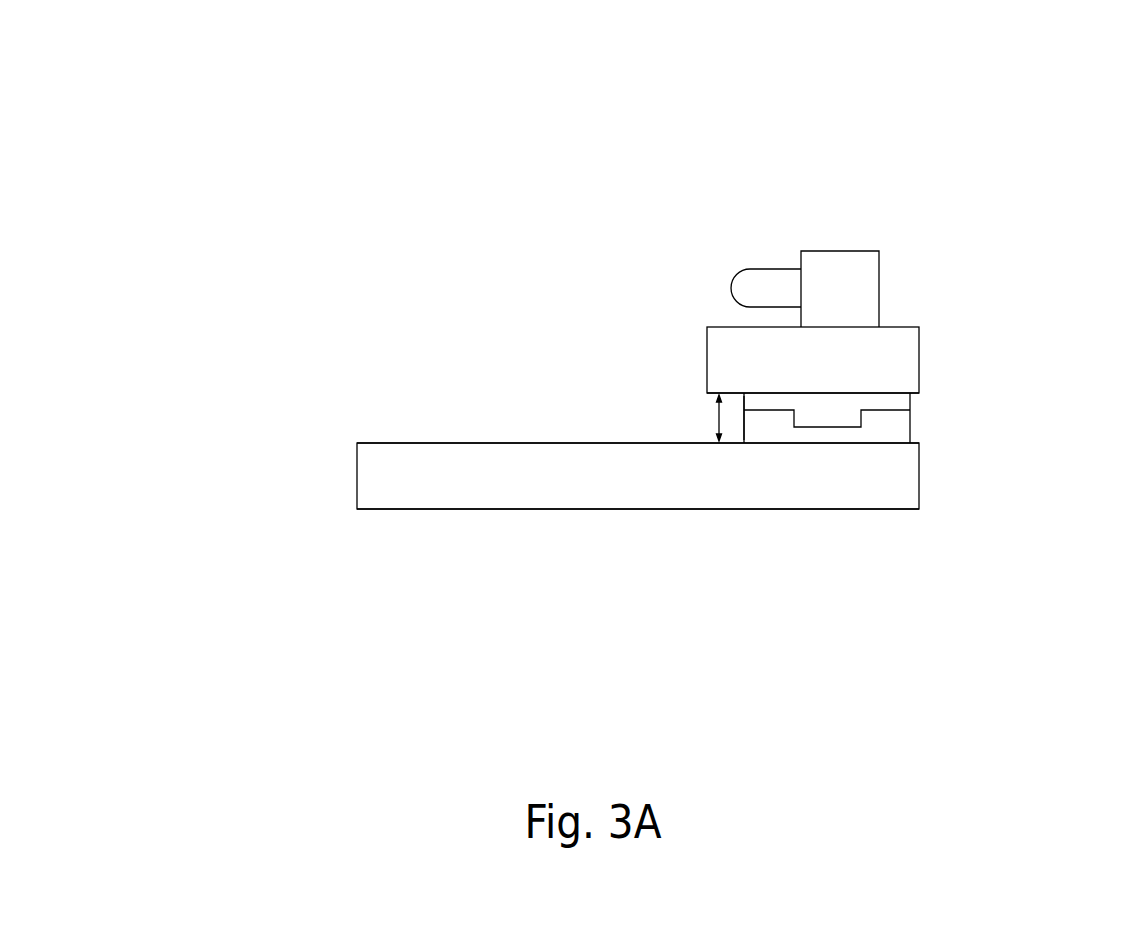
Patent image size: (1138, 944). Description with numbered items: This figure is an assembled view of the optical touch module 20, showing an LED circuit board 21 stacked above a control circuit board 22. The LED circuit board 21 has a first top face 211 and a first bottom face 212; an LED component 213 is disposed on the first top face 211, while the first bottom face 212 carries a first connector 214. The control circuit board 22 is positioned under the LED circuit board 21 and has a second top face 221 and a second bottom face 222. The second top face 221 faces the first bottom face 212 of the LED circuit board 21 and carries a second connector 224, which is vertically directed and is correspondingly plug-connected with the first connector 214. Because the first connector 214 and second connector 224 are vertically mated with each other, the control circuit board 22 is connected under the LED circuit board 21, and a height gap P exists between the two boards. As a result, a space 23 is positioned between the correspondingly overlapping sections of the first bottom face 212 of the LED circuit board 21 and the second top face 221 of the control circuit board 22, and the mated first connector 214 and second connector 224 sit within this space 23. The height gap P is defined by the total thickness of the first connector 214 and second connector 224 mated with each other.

The optical touch module 20 is at (1110, 65).
The LED circuit board 21 is at (717, 360).
The first top face 211 is at (725, 326).
The first bottom face 212 is at (719, 396).
The LED component 213 is at (852, 282).
The first connector 214 is at (878, 403).
The control circuit board 22 is at (357, 477).
The second top face 221 is at (393, 442).
The second bottom face 222 is at (420, 512).
The second connector 224 is at (887, 421).
The space 23 is at (731, 412).
The height gap P is at (717, 415).